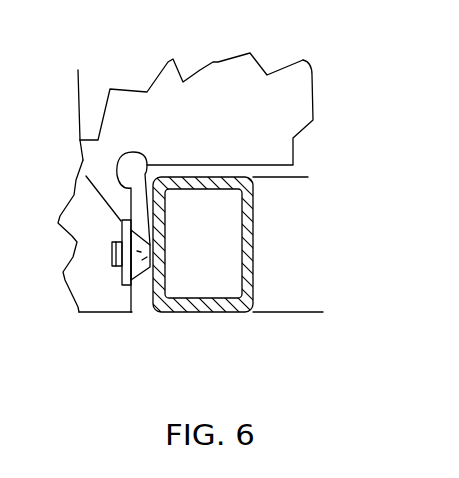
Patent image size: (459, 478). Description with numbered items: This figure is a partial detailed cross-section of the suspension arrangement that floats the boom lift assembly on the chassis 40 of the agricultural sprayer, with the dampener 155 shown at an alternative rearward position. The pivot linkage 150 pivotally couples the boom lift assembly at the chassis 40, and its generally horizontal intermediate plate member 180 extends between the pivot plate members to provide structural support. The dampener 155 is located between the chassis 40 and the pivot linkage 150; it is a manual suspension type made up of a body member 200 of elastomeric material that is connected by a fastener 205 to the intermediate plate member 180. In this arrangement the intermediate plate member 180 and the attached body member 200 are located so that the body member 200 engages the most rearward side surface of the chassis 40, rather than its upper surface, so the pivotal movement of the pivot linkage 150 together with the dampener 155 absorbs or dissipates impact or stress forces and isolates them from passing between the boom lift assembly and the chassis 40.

The chassis 40 is at (289, 332).
The pivot linkage 150 is at (292, 99).
The dampener 155 is at (145, 300).
The intermediate plate member 180 is at (78, 70).
The body member 200 is at (152, 166).
The fastener 205 is at (100, 277).